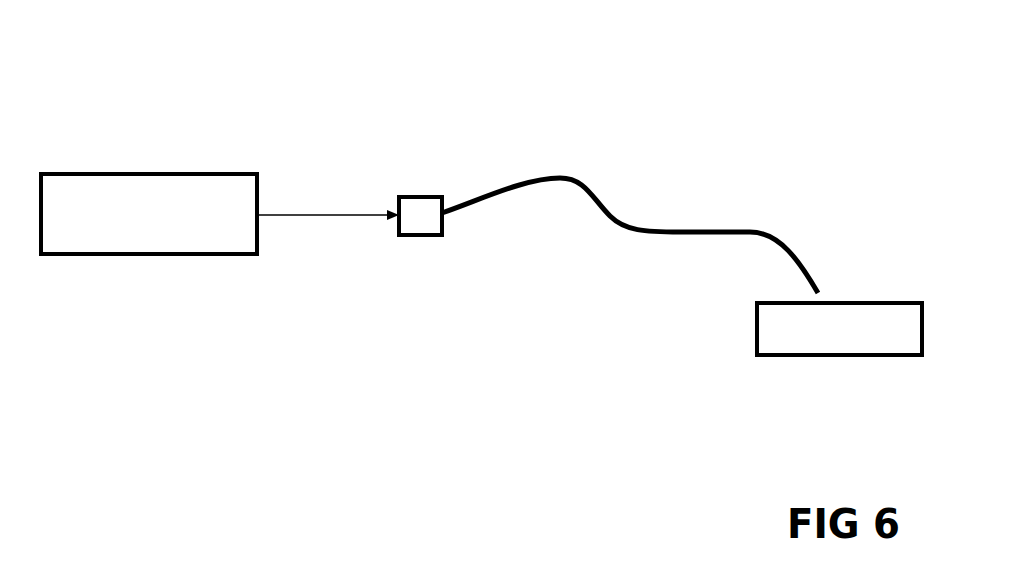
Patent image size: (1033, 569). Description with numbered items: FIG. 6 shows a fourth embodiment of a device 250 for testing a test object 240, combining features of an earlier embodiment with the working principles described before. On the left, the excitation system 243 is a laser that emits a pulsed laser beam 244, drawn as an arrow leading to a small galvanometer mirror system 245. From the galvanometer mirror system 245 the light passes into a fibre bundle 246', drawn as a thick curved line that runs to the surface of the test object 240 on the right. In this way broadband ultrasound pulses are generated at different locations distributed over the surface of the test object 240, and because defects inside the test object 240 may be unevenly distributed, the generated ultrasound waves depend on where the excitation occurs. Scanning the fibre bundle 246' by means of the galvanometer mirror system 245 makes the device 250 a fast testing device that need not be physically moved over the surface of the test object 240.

The device 250 is at (143, 80).
The excitation system 243 is at (203, 197).
The pulsed laser beam 244 is at (343, 214).
The galvanometer mirror system 245 is at (421, 216).
The fibre bundle 246' is at (630, 203).
The test object 240 is at (768, 339).